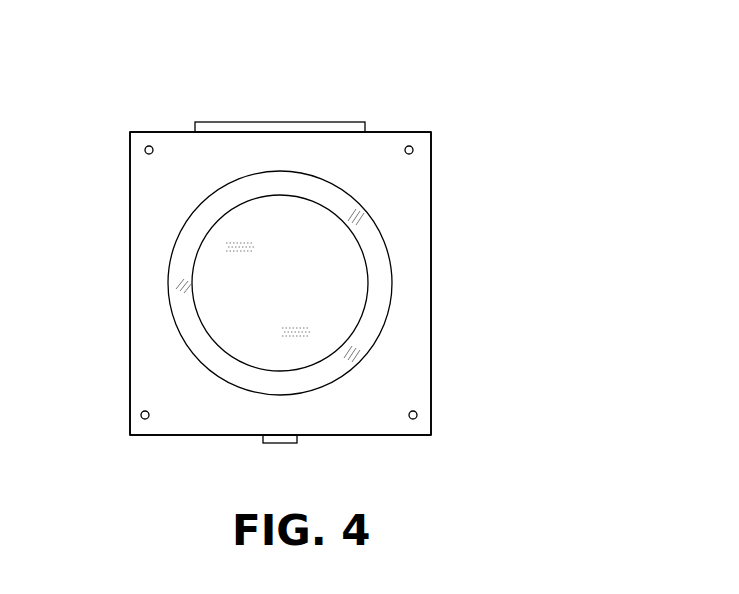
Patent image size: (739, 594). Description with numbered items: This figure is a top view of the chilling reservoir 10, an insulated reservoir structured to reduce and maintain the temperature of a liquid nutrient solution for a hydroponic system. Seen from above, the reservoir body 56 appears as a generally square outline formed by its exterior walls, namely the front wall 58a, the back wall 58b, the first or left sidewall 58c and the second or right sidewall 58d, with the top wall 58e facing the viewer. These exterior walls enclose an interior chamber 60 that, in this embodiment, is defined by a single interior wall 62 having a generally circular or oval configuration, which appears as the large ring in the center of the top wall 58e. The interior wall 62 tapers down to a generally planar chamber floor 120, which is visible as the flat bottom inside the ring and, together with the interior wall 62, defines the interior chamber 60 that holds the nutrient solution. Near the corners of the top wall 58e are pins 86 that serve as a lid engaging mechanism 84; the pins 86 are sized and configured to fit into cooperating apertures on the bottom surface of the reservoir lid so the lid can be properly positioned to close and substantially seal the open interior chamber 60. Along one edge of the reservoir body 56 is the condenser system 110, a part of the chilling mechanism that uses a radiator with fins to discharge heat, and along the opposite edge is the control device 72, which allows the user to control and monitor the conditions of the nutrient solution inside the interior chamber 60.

The chilling reservoir 10 is at (513, 88).
The reservoir body 56 is at (130, 310).
The front wall 58a is at (178, 438).
The back wall 58b is at (173, 120).
The first or left sidewall 58c is at (120, 168).
The second or right sidewall 58d is at (441, 368).
The top wall 58e is at (406, 229).
The interior chamber 60 is at (162, 252).
The interior wall 62 is at (188, 337).
The control device 72 is at (302, 450).
The lid engaging mechanism 84 is at (436, 413).
The pins 86 is at (413, 147).
The condenser system 110 is at (358, 114).
The chamber floor 120 is at (337, 283).